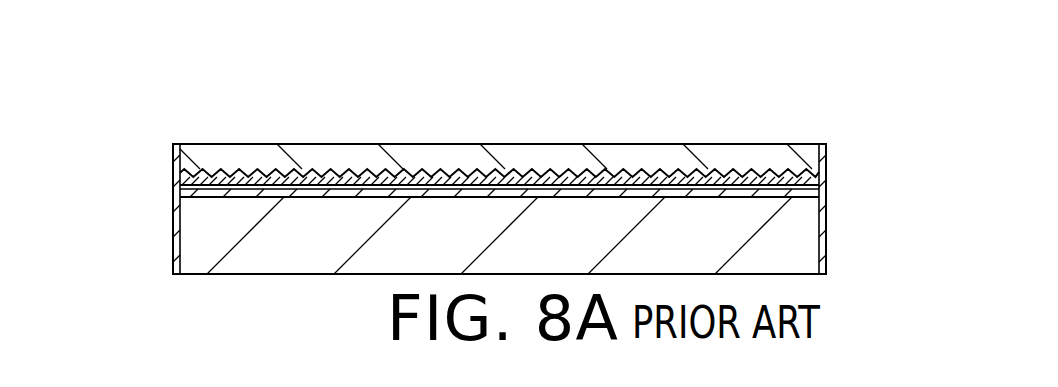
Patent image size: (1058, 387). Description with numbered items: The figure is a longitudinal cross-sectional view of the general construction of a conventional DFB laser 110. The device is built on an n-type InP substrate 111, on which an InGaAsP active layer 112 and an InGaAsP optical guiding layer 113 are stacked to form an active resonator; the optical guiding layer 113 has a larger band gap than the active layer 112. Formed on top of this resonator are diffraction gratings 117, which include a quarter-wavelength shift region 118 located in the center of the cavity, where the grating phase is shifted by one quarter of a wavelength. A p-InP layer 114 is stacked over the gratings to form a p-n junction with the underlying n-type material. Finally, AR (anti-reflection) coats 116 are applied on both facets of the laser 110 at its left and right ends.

The DFB laser 110 is at (310, 138).
The n-type InP substrate 111 is at (802, 245).
The InGaAsP active layer 112 is at (303, 199).
The InGaAsP optical guiding layer 113 is at (542, 168).
The p-InP layer 114 is at (723, 155).
The AR coats 116 is at (173, 208).
The diffraction gratings 117 is at (630, 168).
The λ/4 shift region 118 is at (465, 168).